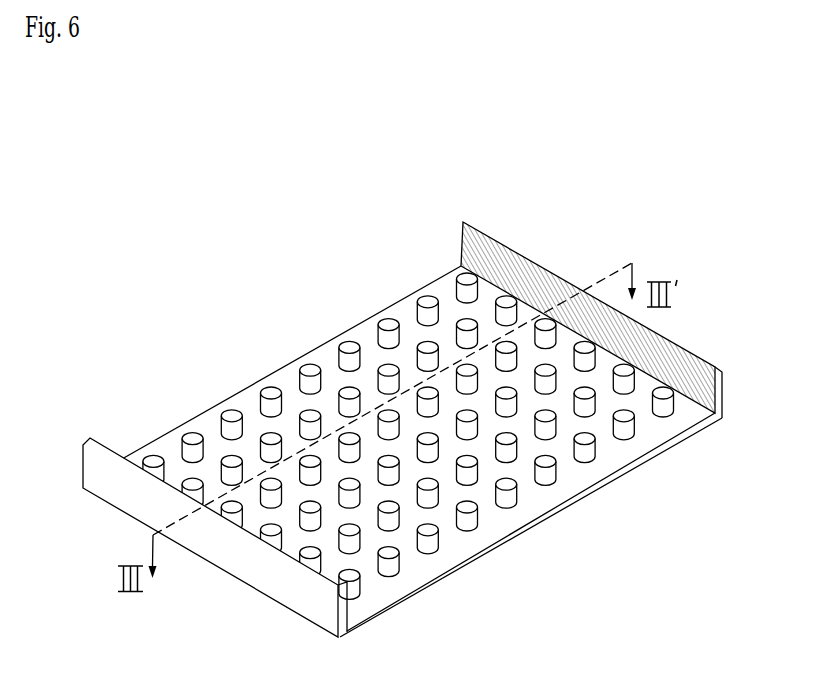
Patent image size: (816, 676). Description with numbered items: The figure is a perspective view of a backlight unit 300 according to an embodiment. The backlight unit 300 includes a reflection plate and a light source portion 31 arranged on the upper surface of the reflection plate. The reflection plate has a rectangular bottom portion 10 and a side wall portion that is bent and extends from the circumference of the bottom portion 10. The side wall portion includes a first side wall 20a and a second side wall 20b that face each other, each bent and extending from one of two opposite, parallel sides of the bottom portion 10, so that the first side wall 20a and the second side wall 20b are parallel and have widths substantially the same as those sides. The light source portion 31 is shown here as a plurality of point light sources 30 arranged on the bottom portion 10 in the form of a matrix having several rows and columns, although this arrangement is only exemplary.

The backlight unit 300 is at (570, 160).
The bottom portion 10 is at (535, 495).
The first side wall 20a is at (685, 363).
The second side wall 20b is at (288, 582).
The point light source 30 is at (433, 547).
The light source portion 31 is at (290, 376).